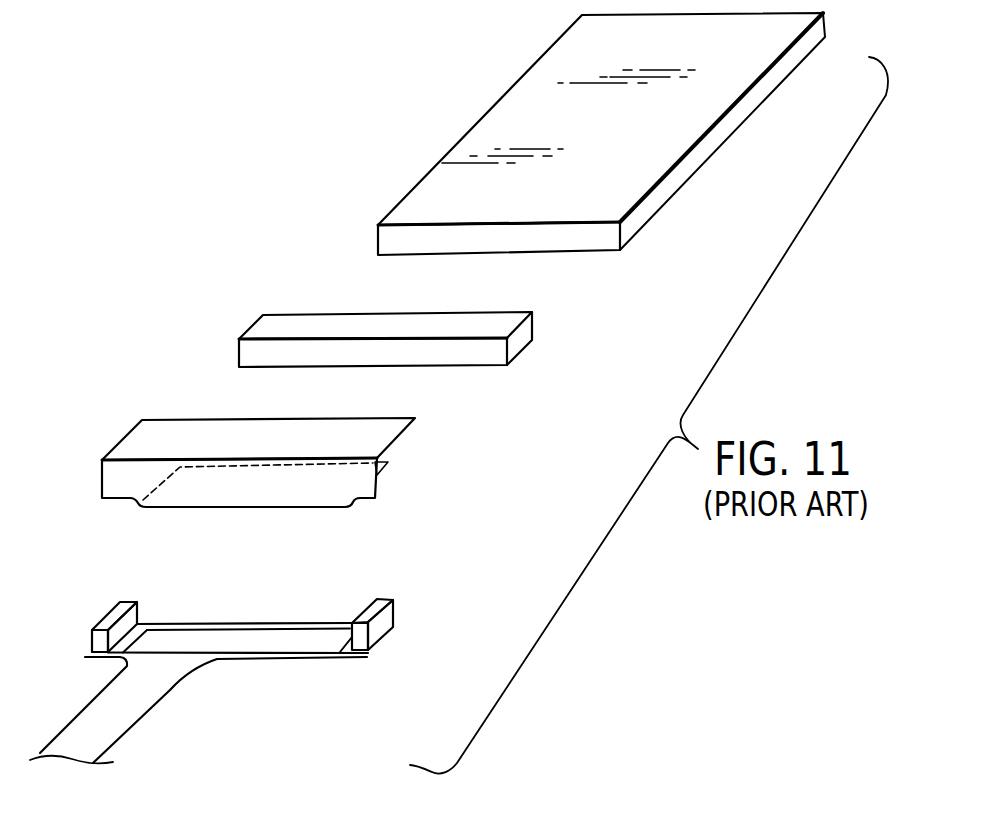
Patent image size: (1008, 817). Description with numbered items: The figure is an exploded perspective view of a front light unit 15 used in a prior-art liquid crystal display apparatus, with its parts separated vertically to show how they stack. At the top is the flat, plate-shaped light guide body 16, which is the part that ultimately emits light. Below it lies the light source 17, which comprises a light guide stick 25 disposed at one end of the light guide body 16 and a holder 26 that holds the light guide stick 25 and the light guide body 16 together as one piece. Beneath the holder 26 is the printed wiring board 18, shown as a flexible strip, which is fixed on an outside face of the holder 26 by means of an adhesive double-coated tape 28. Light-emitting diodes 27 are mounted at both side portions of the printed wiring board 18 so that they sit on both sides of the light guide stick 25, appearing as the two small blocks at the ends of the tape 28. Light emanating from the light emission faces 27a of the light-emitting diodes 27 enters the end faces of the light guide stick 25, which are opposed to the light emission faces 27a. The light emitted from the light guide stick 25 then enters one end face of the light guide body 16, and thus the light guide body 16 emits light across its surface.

The front light unit 15 is at (208, 172).
The light guide body 16 is at (690, 134).
The light source 17 is at (210, 294).
The printed wiring board 18 is at (163, 693).
The light guide stick 25 is at (500, 320).
The holder 26 is at (380, 432).
The light-emitting diodes 27 is at (266, 639).
The light emission faces 27a is at (136, 616).
The adhesive double-coated tape 28 is at (320, 642).